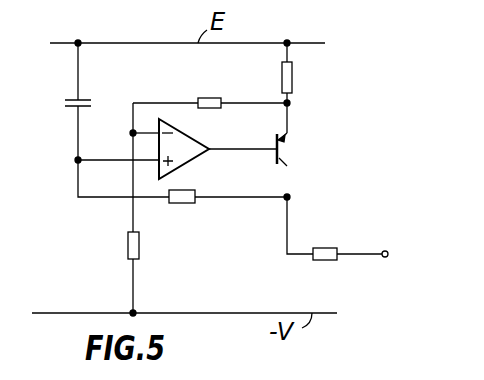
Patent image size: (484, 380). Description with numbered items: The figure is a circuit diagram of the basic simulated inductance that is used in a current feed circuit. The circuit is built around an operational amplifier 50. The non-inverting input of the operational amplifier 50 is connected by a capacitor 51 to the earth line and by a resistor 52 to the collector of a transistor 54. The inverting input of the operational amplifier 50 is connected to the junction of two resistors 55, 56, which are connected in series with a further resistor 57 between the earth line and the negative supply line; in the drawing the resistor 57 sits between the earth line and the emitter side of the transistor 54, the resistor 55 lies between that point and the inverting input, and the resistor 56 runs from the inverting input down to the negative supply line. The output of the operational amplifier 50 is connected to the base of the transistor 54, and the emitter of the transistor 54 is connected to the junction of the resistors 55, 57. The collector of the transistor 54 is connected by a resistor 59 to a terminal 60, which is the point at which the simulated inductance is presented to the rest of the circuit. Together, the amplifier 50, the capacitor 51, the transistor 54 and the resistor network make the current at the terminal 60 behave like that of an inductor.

The operational amplifier 50 is at (219, 132).
The capacitor 51 is at (85, 100).
The resistor 52 is at (181, 204).
The transistor 54 is at (289, 152).
The resistor 55 is at (210, 98).
The resistor 56 is at (128, 244).
The further resistor 57 is at (292, 80).
The resistor 59 is at (322, 248).
The terminal 60 is at (385, 251).